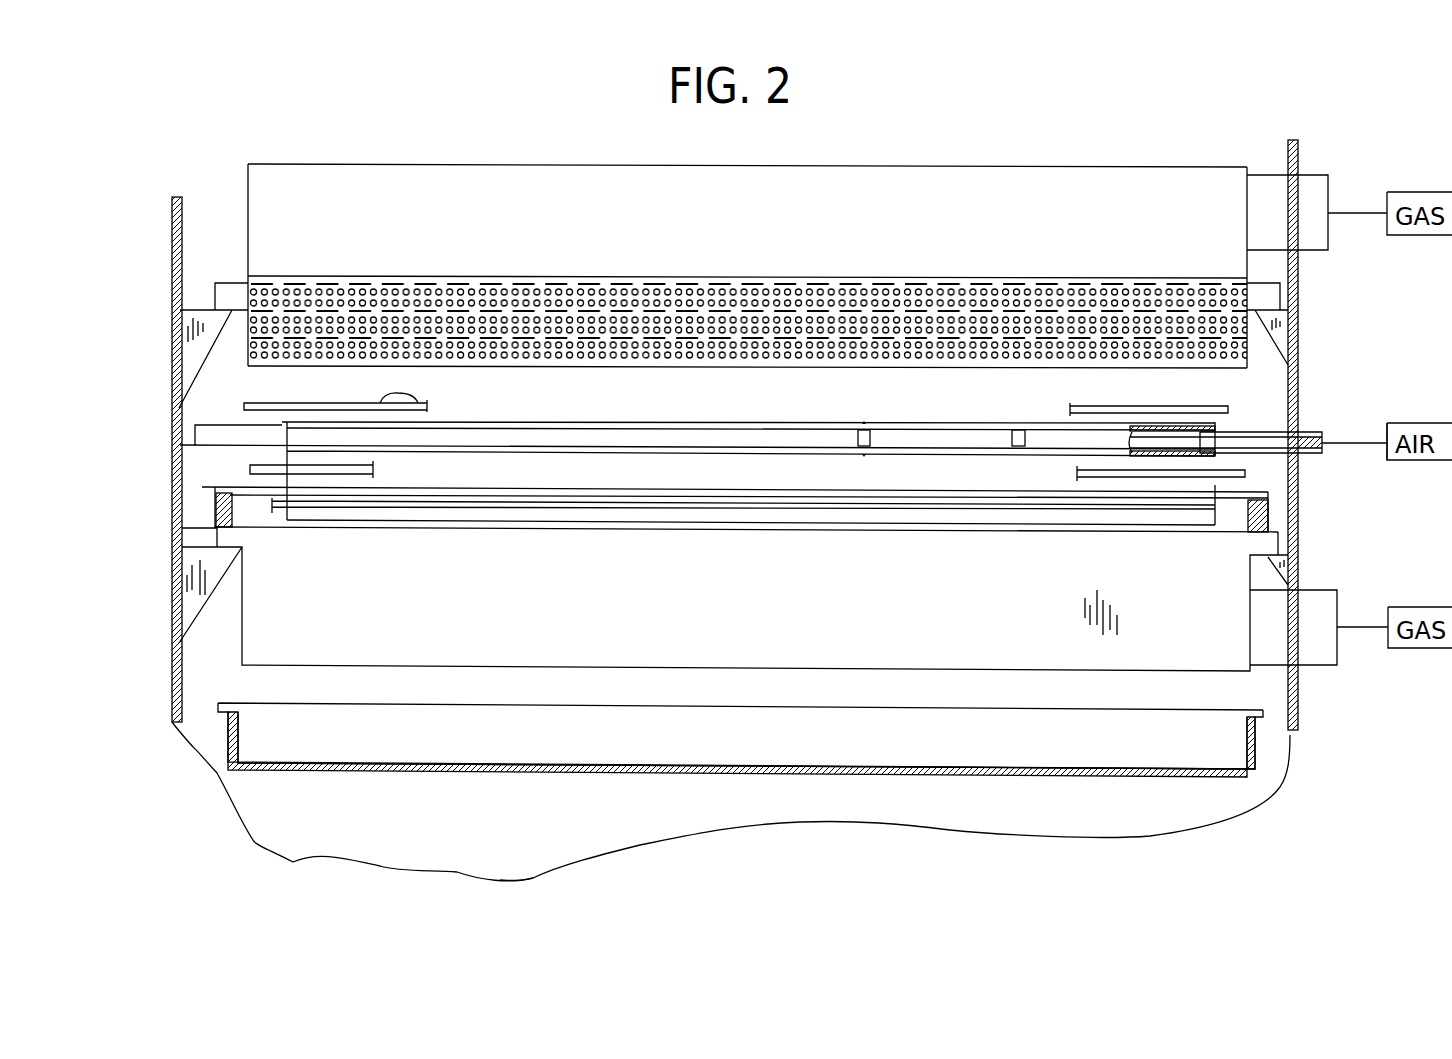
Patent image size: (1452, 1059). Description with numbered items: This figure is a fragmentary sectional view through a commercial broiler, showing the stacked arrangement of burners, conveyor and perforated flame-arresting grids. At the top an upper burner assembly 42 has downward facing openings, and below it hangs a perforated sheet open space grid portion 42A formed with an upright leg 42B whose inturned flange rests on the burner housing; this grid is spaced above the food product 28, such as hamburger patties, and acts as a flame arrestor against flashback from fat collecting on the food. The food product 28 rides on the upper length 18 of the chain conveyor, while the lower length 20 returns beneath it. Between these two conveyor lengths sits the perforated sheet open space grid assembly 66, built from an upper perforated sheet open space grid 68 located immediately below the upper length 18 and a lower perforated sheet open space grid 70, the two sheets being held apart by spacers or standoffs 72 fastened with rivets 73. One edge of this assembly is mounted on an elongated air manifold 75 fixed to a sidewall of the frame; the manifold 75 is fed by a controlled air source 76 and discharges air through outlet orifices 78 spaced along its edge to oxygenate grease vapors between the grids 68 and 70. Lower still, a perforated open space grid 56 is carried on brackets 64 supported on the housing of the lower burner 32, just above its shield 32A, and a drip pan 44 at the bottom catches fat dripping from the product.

The upper length 18 is at (280, 403).
The lower length 20 is at (317, 473).
The hamburger patties 28 is at (418, 398).
The lower burner 32 is at (517, 638).
The shield 32A is at (842, 512).
The upper burner assembly 42 is at (888, 190).
The perforated sheet open space grid portion 42A is at (845, 371).
The upright leg 42B is at (903, 318).
The drip pan 44 is at (542, 773).
The open space grid 56 is at (763, 488).
The brackets 64 is at (215, 513).
The perforated sheet open space grid assembly 66 is at (674, 419).
The upper perforated sheet open space grid 68 is at (573, 413).
The lower perforated sheet open space grid 70 is at (512, 456).
The spacers or standoffs 72 is at (870, 441).
The rivets 73 is at (1020, 424).
The air manifold 75 is at (1257, 431).
The controlled air source 76 is at (1398, 420).
The outlet orifices 78 is at (1197, 442).